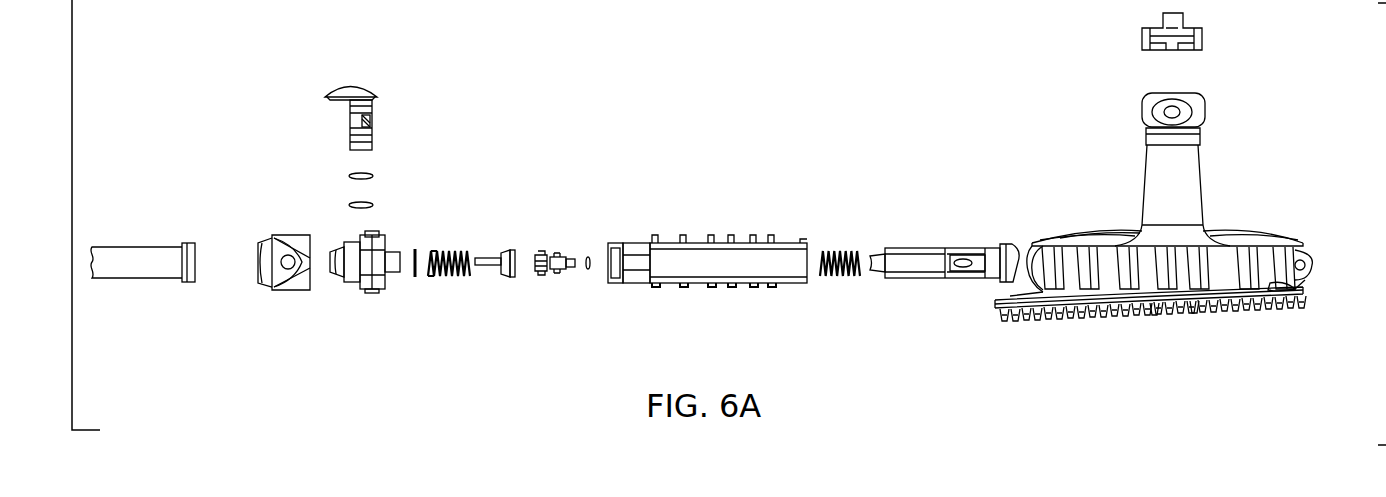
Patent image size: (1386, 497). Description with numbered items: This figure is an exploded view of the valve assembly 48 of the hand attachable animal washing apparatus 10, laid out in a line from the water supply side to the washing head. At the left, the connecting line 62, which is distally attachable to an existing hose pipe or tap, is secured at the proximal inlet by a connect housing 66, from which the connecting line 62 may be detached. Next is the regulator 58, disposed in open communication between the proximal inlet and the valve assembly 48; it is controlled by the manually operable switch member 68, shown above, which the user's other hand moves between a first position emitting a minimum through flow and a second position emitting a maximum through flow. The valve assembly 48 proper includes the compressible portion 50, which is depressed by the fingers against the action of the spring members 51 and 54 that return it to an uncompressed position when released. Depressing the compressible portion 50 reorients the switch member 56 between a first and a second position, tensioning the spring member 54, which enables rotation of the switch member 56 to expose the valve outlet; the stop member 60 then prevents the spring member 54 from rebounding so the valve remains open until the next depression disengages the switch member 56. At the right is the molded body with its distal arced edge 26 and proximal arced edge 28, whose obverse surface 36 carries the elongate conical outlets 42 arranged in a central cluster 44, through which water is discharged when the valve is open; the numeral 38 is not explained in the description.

The hand attachable animal washing apparatus 10 is at (1252, 188).
The distal arced edge 26 is at (1296, 288).
The proximal arced edge 28 is at (1010, 296).
The obverse surface 36 is at (1196, 320).
The upper housing 38 is at (1090, 228).
The outlets 42 is at (1128, 320).
The central cluster 44 is at (1158, 330).
The valve assembly 48 is at (985, 297).
The compressible portion 50 is at (1010, 245).
The spring member 51 is at (835, 250).
The spring member 54 is at (448, 250).
The switch member 56 is at (563, 253).
The regulator 58 is at (372, 290).
The stop member 60 is at (512, 252).
The connecting line 62 is at (158, 245).
The connect housing 66 is at (288, 290).
The manually operable switch member 68 is at (362, 88).